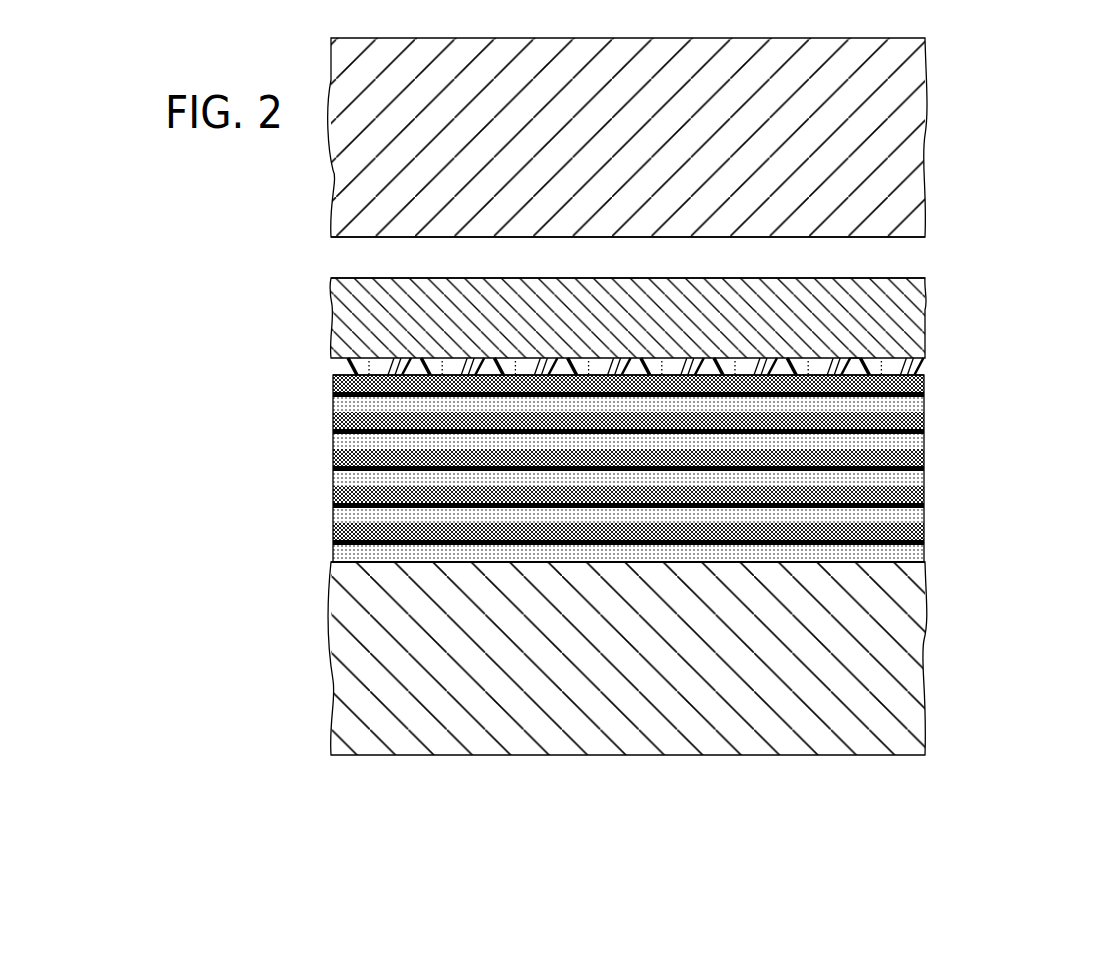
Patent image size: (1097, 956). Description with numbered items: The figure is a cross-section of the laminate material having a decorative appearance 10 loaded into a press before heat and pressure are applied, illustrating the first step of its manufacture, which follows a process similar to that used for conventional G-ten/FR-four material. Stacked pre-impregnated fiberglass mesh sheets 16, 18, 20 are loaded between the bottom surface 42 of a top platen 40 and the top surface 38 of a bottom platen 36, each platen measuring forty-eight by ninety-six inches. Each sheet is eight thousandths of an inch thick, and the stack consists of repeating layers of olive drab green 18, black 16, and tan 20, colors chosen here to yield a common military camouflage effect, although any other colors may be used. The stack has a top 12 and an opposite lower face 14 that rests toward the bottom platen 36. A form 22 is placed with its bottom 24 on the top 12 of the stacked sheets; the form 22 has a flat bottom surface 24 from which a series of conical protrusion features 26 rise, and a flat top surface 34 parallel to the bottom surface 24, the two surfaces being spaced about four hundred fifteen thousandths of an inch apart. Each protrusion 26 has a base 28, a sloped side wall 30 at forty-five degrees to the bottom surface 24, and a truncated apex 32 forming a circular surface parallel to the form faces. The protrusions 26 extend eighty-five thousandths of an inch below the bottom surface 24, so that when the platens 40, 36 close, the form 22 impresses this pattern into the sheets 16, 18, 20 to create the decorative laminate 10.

The laminate material having a decorative appearance 10 is at (619, 472).
The top of the stacked sheets 12 is at (350, 375).
The second major surface of laminate 14 is at (371, 563).
The black sheet 16 is at (925, 392).
The olive drab green sheet 18 is at (925, 388).
The tan sheet 20 is at (925, 403).
The form 22 is at (932, 291).
The bottom surface of the form 24 is at (753, 359).
The conical protrusion features 26 is at (856, 346).
The base 28 is at (888, 358).
The side wall 30 is at (907, 366).
The apex 32 is at (888, 382).
The top surface of the form 34 is at (375, 278).
The bottom platen 36 is at (934, 636).
The top surface of the bottom platen 38 is at (881, 562).
The top platen 40 is at (930, 95).
The bottom surface of the top platen 42 is at (867, 237).